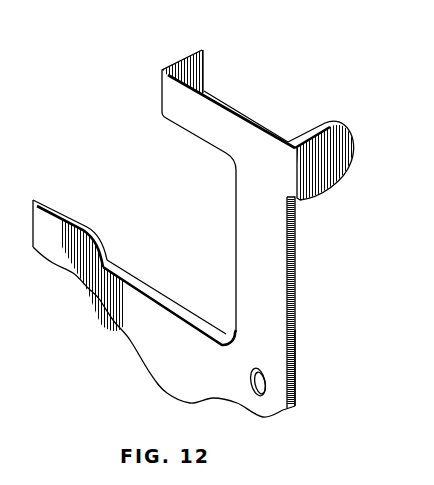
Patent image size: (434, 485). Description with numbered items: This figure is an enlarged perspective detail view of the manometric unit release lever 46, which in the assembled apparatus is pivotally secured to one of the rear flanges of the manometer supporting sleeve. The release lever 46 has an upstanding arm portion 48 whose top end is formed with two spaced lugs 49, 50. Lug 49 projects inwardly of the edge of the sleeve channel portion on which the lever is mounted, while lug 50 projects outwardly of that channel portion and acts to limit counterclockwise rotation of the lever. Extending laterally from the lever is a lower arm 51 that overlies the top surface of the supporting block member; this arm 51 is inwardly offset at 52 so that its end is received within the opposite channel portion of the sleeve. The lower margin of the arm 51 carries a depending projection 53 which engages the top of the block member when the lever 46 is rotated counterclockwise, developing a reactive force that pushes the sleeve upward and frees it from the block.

The release lever 46 is at (295, 387).
The upstanding arm portion 48 is at (270, 293).
The lug 49 is at (197, 50).
The lug 50 is at (327, 162).
The laterally extending lower arm 51 is at (157, 318).
The inward offset 52 is at (108, 265).
The depending projection 53 is at (173, 387).